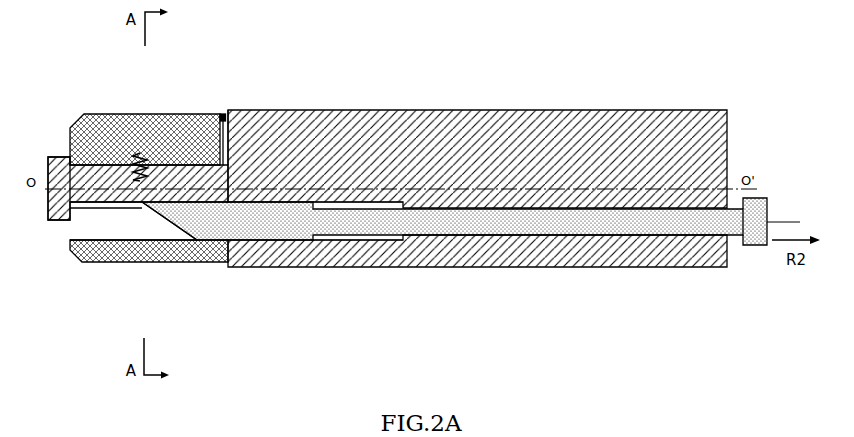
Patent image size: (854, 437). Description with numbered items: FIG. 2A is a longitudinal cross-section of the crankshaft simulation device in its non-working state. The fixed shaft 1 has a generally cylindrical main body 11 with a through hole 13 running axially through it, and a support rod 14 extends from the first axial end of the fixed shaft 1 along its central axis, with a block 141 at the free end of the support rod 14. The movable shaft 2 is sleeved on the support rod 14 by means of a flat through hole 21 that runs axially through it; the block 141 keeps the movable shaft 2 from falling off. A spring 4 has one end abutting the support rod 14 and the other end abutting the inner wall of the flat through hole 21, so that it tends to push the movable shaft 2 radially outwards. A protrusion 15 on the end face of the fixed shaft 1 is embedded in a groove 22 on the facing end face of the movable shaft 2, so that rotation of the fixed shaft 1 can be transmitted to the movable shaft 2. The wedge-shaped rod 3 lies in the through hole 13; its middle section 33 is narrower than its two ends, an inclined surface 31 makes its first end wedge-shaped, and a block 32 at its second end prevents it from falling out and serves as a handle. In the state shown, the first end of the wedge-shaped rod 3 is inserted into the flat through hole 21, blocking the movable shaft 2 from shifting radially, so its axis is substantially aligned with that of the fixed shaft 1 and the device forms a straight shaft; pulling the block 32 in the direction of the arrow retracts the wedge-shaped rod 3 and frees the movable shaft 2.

The fixed shaft 1 is at (477, 160).
The main body 11 is at (431, 130).
The through hole 13 is at (355, 240).
The support rod 14 is at (98, 190).
The block 141 is at (61, 165).
The movable shaft 2 is at (165, 125).
The flat through hole 21 is at (138, 226).
The groove 22 is at (221, 140).
The protrusion 15 is at (224, 115).
The spring 4 is at (135, 153).
The wedge-shaped rod 3 is at (442, 270).
The middle section 33 is at (503, 228).
The inclined surface 31 is at (173, 232).
The block 32 is at (753, 237).